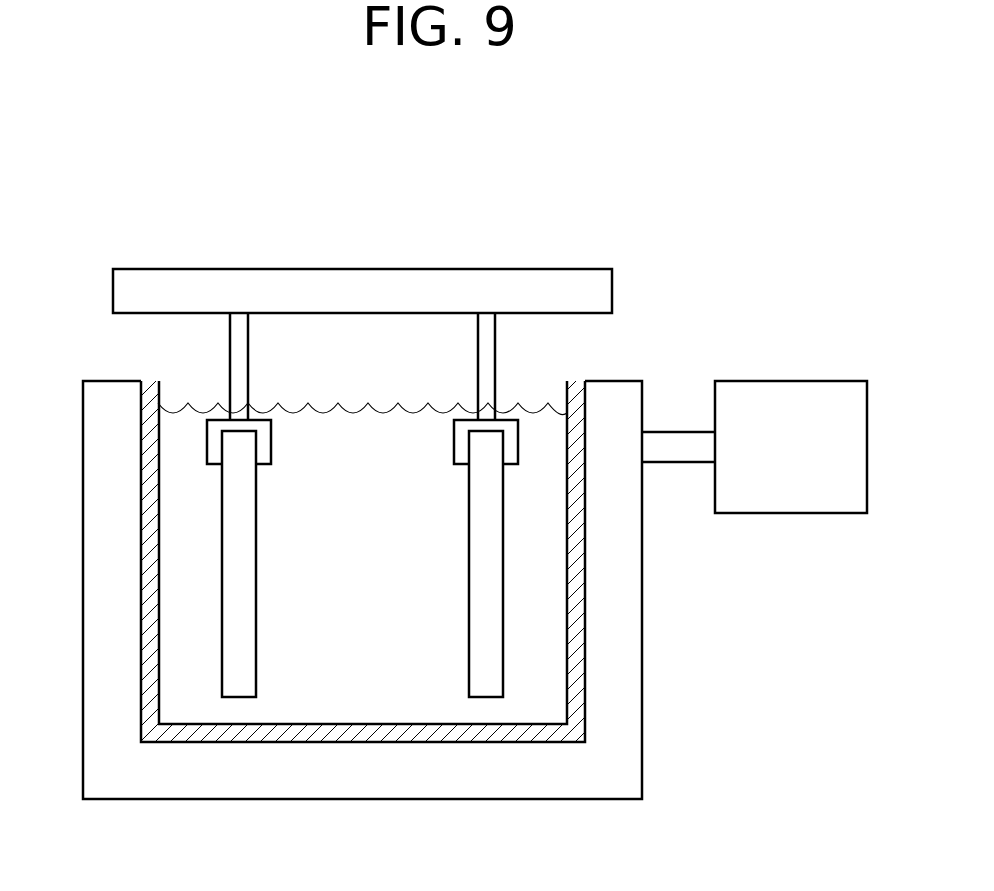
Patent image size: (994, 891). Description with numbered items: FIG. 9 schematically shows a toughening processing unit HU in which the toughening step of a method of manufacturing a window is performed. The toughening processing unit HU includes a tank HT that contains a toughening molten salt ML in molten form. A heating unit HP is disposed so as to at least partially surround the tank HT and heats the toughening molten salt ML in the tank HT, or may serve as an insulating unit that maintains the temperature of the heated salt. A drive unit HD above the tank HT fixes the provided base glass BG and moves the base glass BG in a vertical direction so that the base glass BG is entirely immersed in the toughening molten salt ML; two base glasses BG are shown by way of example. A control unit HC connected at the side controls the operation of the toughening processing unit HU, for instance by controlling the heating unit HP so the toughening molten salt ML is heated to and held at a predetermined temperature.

The toughening processing unit HU is at (122, 204).
The drive unit HD is at (558, 270).
The control unit HC is at (816, 380).
The heating unit HP is at (349, 785).
The tank HT is at (392, 730).
The toughening molten salt ML is at (442, 713).
The base glass BG is at (483, 690).